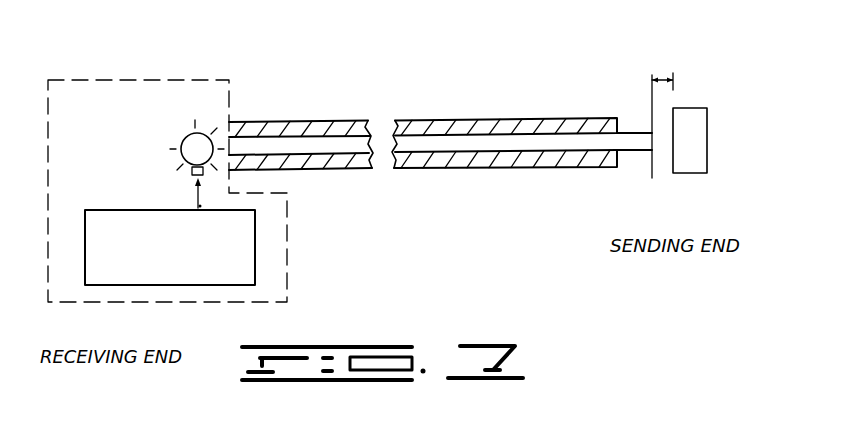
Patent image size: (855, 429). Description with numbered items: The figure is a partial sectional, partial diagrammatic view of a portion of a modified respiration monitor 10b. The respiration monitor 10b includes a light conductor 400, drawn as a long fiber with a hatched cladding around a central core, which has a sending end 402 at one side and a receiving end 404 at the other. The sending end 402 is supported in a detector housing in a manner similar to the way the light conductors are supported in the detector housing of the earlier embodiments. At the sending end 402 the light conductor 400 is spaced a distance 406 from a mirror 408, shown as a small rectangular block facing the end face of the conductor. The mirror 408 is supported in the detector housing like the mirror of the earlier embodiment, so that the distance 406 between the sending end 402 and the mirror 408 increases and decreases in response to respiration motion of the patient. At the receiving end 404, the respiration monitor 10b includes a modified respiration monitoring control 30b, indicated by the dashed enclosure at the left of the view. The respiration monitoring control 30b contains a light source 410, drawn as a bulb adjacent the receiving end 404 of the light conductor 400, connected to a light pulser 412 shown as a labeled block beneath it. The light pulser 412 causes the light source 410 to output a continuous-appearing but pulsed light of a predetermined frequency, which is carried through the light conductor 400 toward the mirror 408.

The respiration monitoring control 30b is at (98, 72).
The respiration monitor 10b is at (522, 107).
The light conductor 400 is at (440, 170).
The sending end 402 is at (652, 178).
The receiving end 404 is at (229, 122).
The distance 406 is at (663, 78).
The mirror 408 is at (692, 108).
The light source 410 is at (182, 138).
The light pulser 412 is at (182, 287).